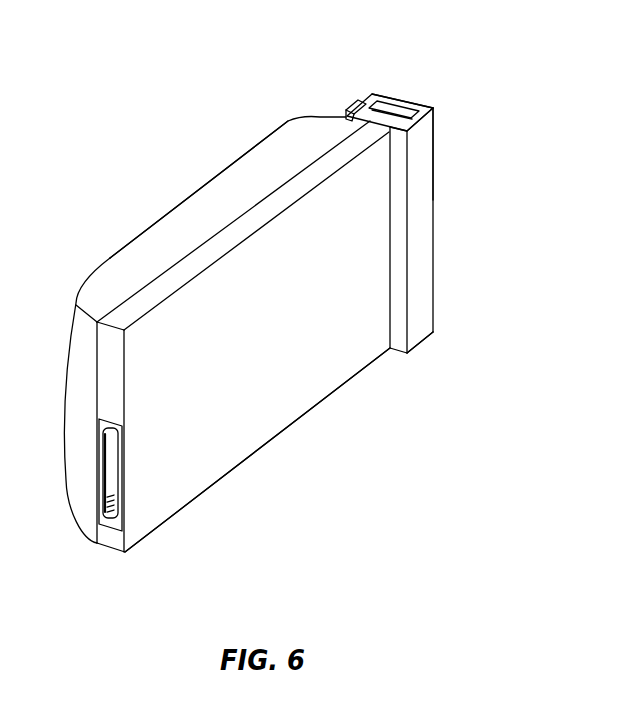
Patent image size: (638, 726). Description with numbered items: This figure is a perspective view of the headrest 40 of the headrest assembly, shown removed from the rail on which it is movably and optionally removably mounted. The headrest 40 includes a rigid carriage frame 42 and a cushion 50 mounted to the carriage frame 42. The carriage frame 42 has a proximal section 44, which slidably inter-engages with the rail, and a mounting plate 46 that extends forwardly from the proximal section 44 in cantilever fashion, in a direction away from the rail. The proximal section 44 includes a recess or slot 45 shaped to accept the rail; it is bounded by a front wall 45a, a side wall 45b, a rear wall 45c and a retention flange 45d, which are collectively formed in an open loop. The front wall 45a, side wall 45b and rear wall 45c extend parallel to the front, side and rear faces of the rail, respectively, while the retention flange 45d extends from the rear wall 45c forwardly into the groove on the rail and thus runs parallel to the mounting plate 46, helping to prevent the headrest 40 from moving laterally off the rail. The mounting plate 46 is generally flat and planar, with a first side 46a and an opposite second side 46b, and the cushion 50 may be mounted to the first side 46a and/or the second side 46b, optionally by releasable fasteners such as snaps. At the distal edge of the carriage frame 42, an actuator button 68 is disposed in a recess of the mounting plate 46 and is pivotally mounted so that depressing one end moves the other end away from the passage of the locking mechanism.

The headrest 40 is at (150, 161).
The carriage frame 42 is at (422, 232).
The proximal section 44 is at (418, 257).
The slot 45 is at (383, 110).
The front wall 45a is at (408, 137).
The side wall 45b is at (422, 162).
The rear wall 45c is at (403, 103).
The retention flange 45d is at (362, 102).
The mounting plate 46 is at (215, 430).
The first side 46a is at (268, 187).
The second side 46b is at (290, 385).
The cushion 50 is at (145, 255).
The actuator button 68 is at (110, 475).